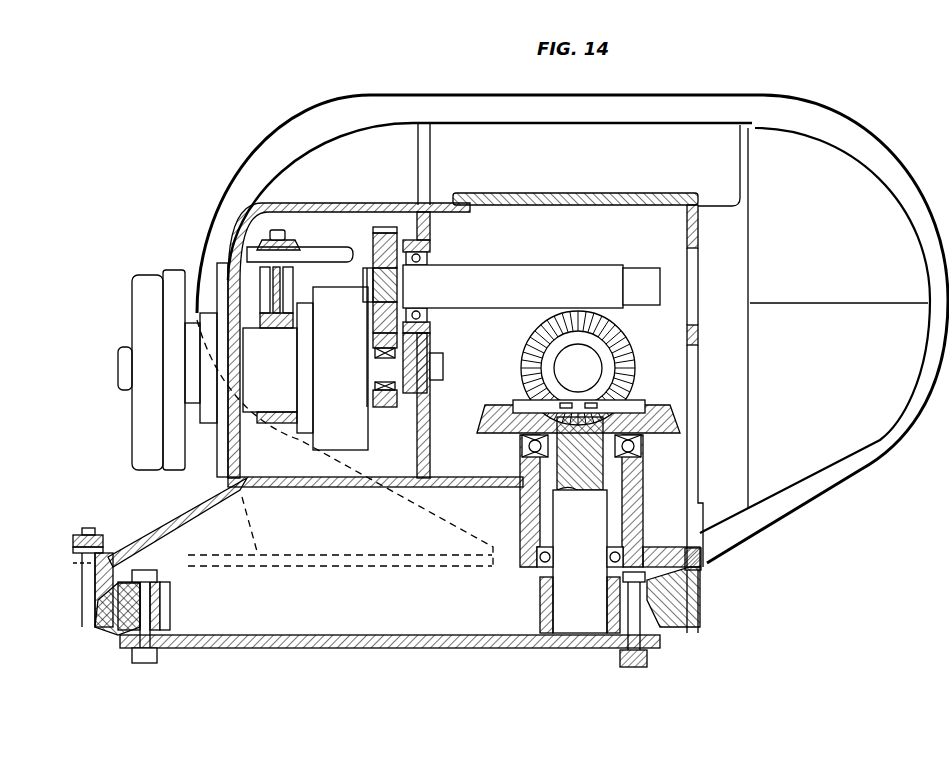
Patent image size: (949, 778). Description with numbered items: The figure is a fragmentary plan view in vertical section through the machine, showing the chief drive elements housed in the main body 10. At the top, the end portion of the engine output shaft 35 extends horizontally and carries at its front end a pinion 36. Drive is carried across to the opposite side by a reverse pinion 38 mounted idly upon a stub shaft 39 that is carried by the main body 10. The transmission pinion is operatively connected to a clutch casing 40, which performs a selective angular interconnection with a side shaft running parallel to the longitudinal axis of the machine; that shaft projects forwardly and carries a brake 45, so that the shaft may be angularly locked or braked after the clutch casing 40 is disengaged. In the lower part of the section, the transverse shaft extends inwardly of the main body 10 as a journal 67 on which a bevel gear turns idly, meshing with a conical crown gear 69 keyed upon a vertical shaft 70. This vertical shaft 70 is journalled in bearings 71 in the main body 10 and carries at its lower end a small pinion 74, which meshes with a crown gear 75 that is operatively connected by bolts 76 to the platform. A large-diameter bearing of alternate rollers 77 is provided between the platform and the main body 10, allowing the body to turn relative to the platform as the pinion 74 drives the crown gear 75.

The main body 10 is at (838, 246).
The output shaft end portion 35 is at (548, 272).
The pinion 36 is at (432, 243).
The reverse pinion 38 is at (391, 395).
The stub shaft 39 is at (416, 364).
The clutch casing 40 is at (345, 440).
The brake 45 is at (138, 452).
The journal 67 is at (606, 355).
The conical crown gear 69 is at (683, 418).
The vertical shaft 70 is at (590, 507).
The bearings 71 is at (642, 446).
The small pinion 74 is at (540, 590).
The crown gear 75 is at (165, 603).
The bolts 76 is at (640, 630).
The rollers 77 is at (690, 603).